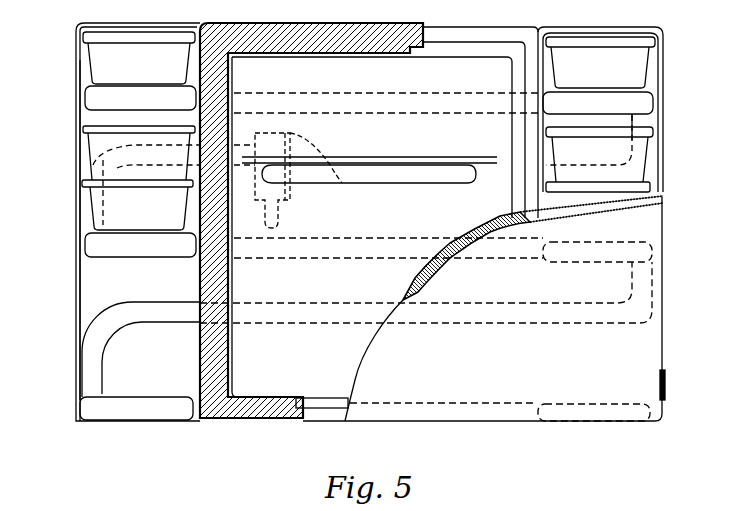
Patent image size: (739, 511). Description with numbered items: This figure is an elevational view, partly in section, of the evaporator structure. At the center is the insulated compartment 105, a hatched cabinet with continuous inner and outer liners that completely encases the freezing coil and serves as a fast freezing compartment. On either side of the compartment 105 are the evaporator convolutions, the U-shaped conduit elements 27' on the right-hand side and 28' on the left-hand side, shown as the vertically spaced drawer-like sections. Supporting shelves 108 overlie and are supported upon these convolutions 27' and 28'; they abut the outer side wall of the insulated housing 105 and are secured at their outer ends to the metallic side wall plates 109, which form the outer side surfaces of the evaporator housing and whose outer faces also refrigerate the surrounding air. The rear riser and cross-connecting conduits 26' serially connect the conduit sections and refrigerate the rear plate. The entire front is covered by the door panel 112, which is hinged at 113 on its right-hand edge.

The insulated compartment 105 is at (232, 76).
The supporting shelves 108 is at (82, 80).
The metallic side wall plates 109 is at (78, 190).
The door panel 112 is at (504, 308).
The hinge 113 is at (666, 381).
The riser and cross-connecting conduits 26' is at (367, 329).
The U-shaped conduit elements 27' is at (595, 257).
The U-shaped conduit elements 28' is at (138, 253).